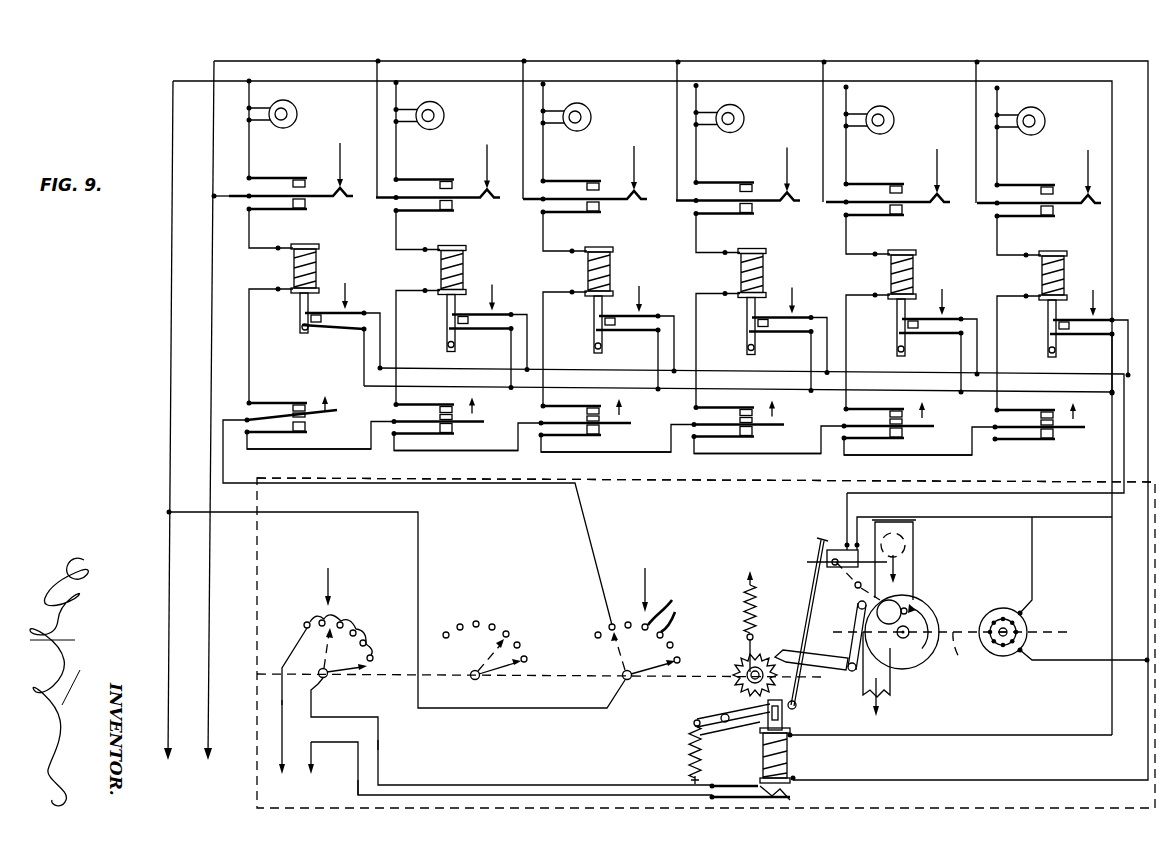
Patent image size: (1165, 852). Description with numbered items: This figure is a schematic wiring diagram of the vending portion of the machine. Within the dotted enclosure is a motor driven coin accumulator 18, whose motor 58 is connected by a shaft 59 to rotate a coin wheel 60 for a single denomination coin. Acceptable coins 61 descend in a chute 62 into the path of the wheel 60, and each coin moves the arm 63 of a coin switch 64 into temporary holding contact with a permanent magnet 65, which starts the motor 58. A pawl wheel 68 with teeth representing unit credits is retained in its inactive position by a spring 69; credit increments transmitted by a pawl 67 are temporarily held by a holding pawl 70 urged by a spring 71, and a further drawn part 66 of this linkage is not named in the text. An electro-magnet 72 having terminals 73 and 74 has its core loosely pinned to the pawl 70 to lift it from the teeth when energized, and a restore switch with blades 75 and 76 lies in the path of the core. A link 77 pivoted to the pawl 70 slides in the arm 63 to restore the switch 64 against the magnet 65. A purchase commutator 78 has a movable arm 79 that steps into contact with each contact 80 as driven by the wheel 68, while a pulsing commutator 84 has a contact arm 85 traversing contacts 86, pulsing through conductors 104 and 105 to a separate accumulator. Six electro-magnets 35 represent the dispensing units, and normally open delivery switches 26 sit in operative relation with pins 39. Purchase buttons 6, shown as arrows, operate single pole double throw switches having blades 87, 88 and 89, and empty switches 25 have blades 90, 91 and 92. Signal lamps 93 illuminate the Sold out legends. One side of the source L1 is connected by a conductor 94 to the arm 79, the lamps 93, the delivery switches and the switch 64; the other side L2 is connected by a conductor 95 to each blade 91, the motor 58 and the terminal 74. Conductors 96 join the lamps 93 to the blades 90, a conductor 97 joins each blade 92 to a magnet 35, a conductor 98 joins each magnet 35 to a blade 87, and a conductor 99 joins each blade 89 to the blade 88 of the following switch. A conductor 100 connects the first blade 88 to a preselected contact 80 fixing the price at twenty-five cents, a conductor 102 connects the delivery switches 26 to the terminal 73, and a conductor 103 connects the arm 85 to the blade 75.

The purchase buttons 6 is at (696, 425).
The coin accumulator 18 is at (600, 482).
The empty switches 25 is at (705, 162).
The delivery switches 26 is at (716, 330).
The electro-magnets 35 is at (695, 269).
The pins 39 is at (300, 332).
The motor 58 is at (1026, 618).
The shaft 59 is at (958, 652).
The coin wheel 60 is at (925, 613).
The acceptable coins 61 is at (925, 600).
The chute 62 is at (913, 560).
The arm 63 is at (858, 517).
The coin switch 64 is at (835, 550).
The permanent magnet 65 is at (856, 587).
The link 66 is at (857, 640).
The pawl 67 is at (830, 668).
The pawl wheel 68 is at (740, 670).
The spring 69 is at (745, 600).
The holding pawl 70 is at (745, 727).
The spring 71 is at (692, 740).
The electro-magnet 72 is at (790, 758).
The terminal 73 is at (790, 735).
The terminal 74 is at (792, 779).
The restore switch blade 75 is at (693, 778).
The restore switch blade 76 is at (712, 797).
The link 77 is at (812, 575).
The purchase commutator 78 is at (648, 579).
The movable arm 79 is at (632, 682).
The contacts 80 is at (670, 607).
The pulsing commutator 84 is at (329, 576).
The contact arm 85 is at (340, 677).
The contacts 86 is at (355, 627).
The blade 87 is at (247, 404).
The blade 88 is at (246, 420).
The blade 89 is at (246, 433).
The blade 90 is at (651, 172).
The blade 91 is at (248, 197).
The blade 92 is at (249, 212).
The signal lamps 93 is at (663, 110).
The conductor 94 is at (742, 81).
The conductor 95 is at (298, 61).
The conductors 96 is at (644, 132).
The conductor 97 is at (645, 245).
The conductor 98 is at (645, 349).
The conductor 99 is at (609, 463).
The conductor 100 is at (412, 485).
The conductor 102 is at (361, 345).
The conductor 103 is at (379, 745).
The conductor 104 is at (426, 766).
The conductor 105 is at (282, 722).
The source of energy side L1 is at (167, 778).
The source of energy side L2 is at (207, 778).